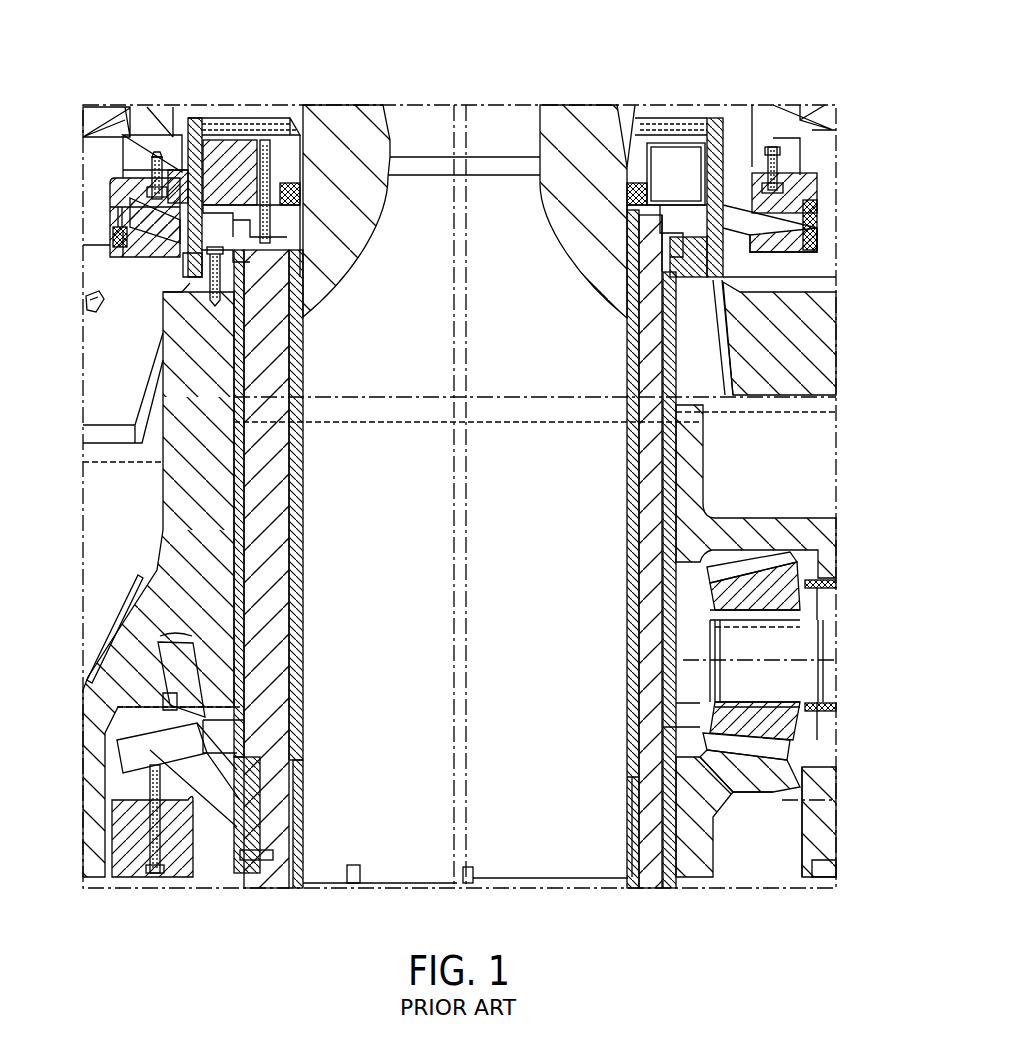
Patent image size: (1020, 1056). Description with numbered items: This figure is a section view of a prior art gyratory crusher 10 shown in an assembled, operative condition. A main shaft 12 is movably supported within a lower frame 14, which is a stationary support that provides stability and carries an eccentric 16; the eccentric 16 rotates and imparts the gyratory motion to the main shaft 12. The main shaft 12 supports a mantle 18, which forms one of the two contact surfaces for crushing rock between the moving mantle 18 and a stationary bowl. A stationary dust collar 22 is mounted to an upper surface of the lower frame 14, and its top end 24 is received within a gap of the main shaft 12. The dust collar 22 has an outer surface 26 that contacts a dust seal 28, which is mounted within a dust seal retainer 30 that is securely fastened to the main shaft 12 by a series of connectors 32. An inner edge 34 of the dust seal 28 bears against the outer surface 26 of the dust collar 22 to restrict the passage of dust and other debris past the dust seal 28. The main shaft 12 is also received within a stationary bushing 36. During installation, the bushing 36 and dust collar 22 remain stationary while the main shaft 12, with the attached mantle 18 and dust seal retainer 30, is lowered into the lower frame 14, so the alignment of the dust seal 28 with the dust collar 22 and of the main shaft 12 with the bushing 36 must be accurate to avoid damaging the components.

The gyratory crusher 10 is at (861, 273).
The main shaft 12 is at (553, 860).
The lower frame 14 is at (177, 527).
The eccentric 16 is at (277, 580).
The mantle 18 is at (98, 112).
The dust collar 22 is at (188, 268).
The top end 24 is at (189, 118).
The outer surface 26 is at (725, 147).
The dust seal 28 is at (748, 220).
The dust seal retainer 30 is at (175, 212).
The connectors 32 is at (150, 160).
The inner edge 34 is at (165, 237).
The bushing 36 is at (297, 358).